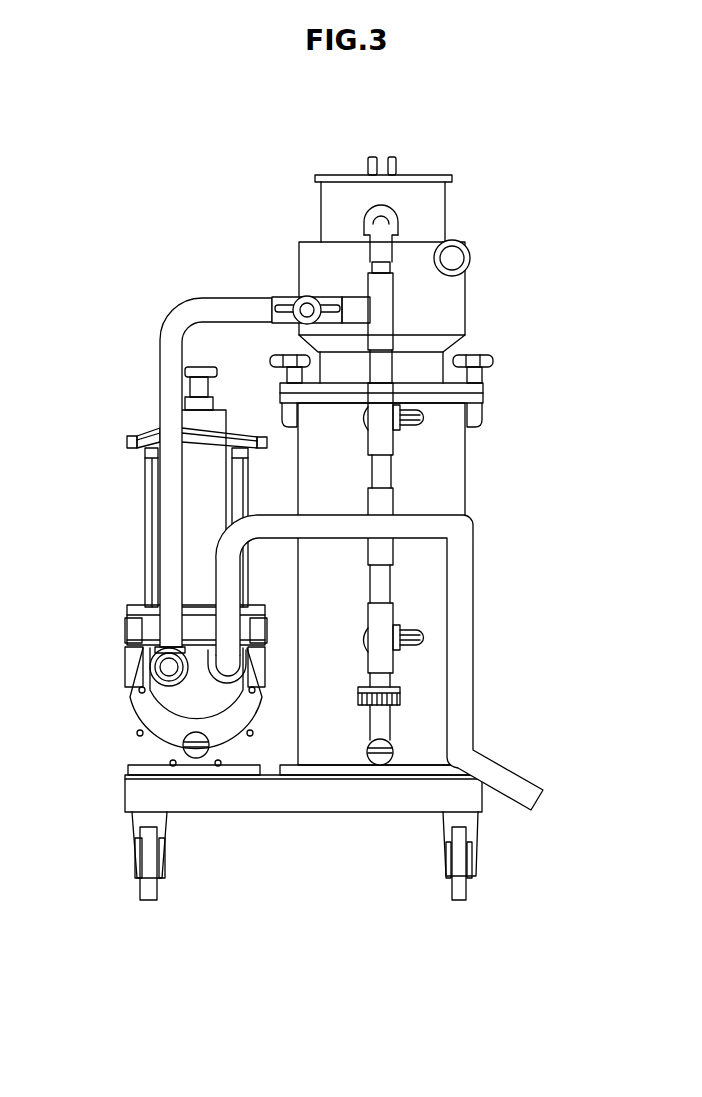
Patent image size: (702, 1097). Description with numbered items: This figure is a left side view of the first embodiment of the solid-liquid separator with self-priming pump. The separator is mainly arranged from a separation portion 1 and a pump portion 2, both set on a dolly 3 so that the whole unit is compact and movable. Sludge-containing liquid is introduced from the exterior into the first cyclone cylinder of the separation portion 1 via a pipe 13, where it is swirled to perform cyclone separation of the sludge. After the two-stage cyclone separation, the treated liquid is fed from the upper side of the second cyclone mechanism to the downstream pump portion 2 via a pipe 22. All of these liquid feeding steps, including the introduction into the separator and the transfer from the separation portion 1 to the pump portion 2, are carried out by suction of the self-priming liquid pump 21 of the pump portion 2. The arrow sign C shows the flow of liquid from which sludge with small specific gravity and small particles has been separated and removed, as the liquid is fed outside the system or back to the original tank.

The separation portion 1 is at (468, 183).
The pump portion 2 is at (88, 453).
The dolly 3 is at (142, 793).
The pipe 13 is at (468, 255).
The self-priming liquid pump 21 is at (138, 432).
The pipe 22 is at (205, 310).
The arrow sign C is at (538, 802).